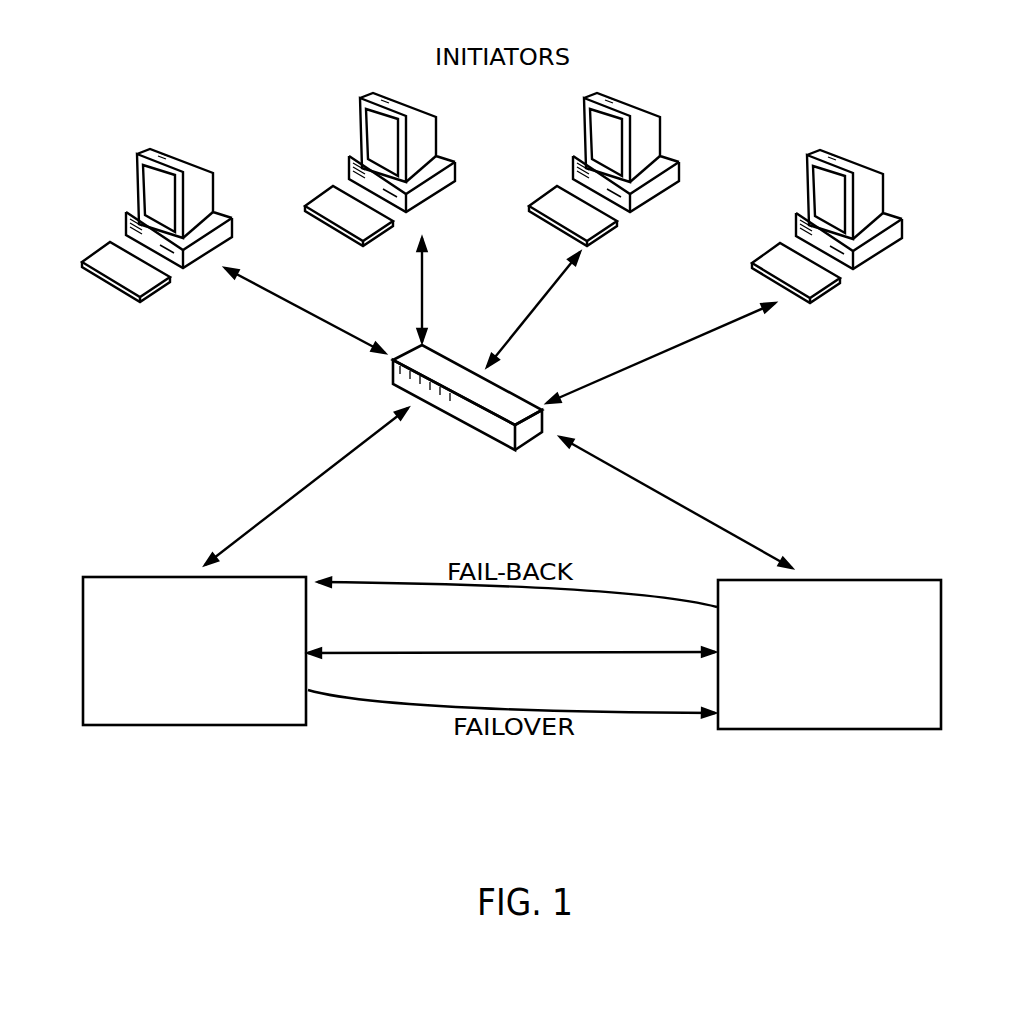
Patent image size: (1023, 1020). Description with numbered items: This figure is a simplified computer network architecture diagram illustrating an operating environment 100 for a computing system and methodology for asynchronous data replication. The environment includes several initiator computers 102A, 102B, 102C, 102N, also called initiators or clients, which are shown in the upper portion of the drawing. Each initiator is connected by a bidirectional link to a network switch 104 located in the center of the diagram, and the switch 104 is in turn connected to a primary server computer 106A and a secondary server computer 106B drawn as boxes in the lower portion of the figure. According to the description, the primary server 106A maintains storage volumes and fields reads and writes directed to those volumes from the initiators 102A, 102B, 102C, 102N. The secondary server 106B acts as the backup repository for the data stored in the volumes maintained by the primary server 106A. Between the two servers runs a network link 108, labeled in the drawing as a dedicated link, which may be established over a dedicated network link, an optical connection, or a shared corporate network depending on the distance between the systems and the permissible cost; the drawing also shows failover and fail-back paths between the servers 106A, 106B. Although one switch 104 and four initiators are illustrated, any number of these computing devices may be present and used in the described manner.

The operating environment 100 is at (944, 124).
The initiator computer 102A is at (158, 157).
The initiator computer 102B is at (362, 101).
The initiator computer 102C is at (638, 100).
The initiator computer 102N is at (825, 152).
The network switch 104 is at (470, 420).
The primary server computer 106A is at (97, 582).
The secondary server computer 106B is at (900, 593).
The network link 108 is at (360, 650).